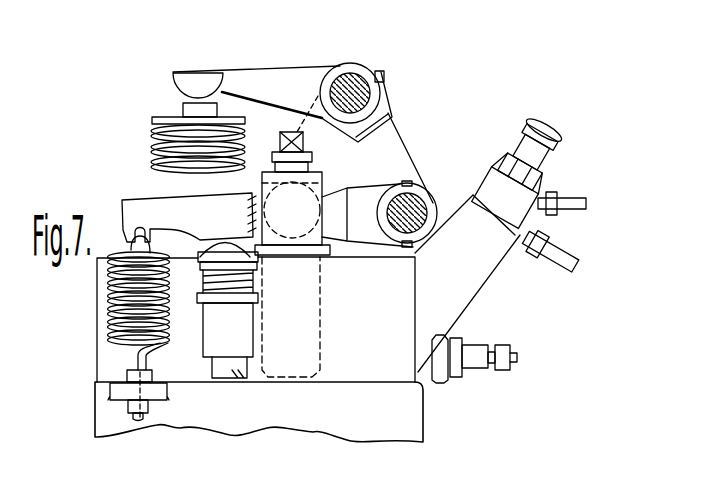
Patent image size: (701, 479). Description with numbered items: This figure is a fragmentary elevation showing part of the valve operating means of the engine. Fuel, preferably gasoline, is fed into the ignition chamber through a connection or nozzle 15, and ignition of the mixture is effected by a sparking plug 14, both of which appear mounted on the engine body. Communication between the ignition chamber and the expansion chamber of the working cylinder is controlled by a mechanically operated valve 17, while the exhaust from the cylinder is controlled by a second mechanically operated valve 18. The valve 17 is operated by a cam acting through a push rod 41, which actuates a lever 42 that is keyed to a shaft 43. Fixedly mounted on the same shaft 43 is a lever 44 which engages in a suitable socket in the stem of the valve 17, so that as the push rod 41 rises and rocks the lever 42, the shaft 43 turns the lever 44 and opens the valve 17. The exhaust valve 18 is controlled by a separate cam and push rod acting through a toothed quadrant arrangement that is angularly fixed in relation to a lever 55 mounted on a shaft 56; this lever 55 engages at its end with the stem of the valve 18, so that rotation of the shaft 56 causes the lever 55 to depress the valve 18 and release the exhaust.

The sparking plug 14 is at (477, 342).
The connection or nozzle 15 is at (540, 177).
The mechanically operated valve 17 is at (322, 318).
The mechanically operated valve 18 is at (180, 108).
The push rod 41 is at (250, 372).
The lever 42 is at (152, 197).
The shaft 43 is at (417, 207).
The lever 44 is at (322, 193).
The lever 55 is at (243, 70).
The shaft 56 is at (350, 78).